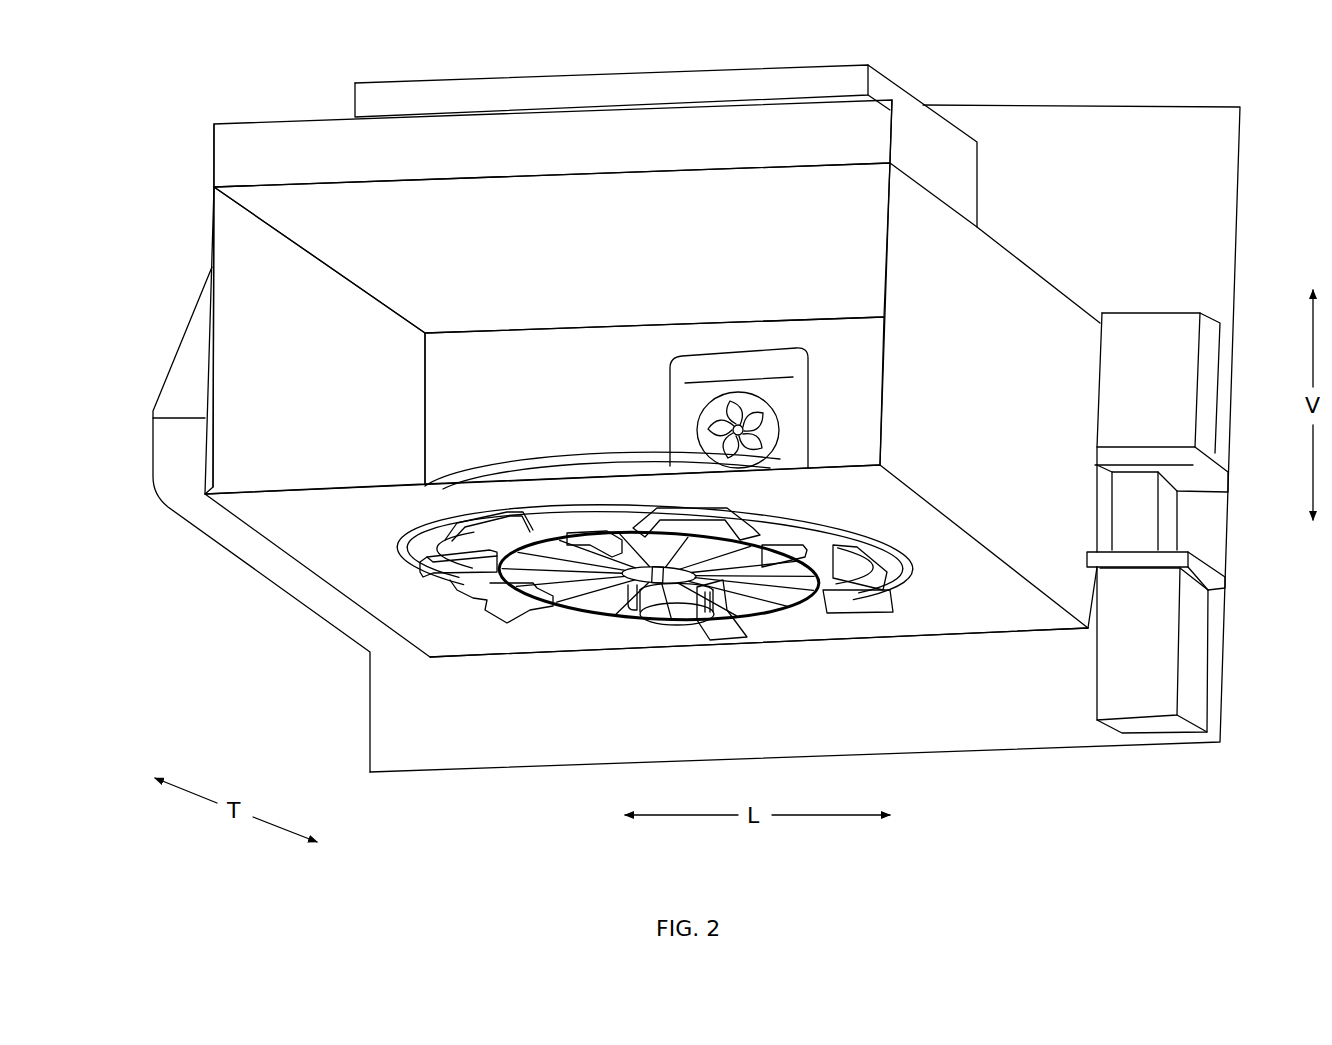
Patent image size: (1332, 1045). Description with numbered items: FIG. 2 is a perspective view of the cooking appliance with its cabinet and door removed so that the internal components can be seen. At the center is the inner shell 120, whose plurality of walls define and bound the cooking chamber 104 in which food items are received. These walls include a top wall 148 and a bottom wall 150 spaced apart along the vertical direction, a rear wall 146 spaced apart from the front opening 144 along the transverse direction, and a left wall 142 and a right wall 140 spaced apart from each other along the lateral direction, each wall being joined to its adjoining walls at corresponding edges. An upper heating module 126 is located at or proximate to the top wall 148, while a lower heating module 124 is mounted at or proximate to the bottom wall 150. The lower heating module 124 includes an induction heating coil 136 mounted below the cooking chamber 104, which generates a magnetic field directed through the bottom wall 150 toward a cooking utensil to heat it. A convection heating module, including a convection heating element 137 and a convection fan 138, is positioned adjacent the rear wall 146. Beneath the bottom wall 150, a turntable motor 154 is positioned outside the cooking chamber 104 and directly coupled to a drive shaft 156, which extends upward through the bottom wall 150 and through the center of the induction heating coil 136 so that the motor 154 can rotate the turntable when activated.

The cooking chamber 104 is at (260, 452).
The inner shell 120 is at (990, 608).
The lower heating module 124 is at (444, 573).
The upper heating module 126 is at (384, 82).
The induction heating coil 136 is at (600, 590).
The convection heating element 137 is at (703, 418).
The convection fan 138 is at (757, 415).
The right wall 140 is at (805, 438).
The left wall 142 is at (315, 340).
The front opening 144 is at (212, 227).
The rear wall 146 is at (654, 400).
The top wall 148 is at (552, 248).
The bottom wall 150 is at (646, 561).
The motor 154 is at (670, 620).
The drive shaft 156 is at (637, 612).